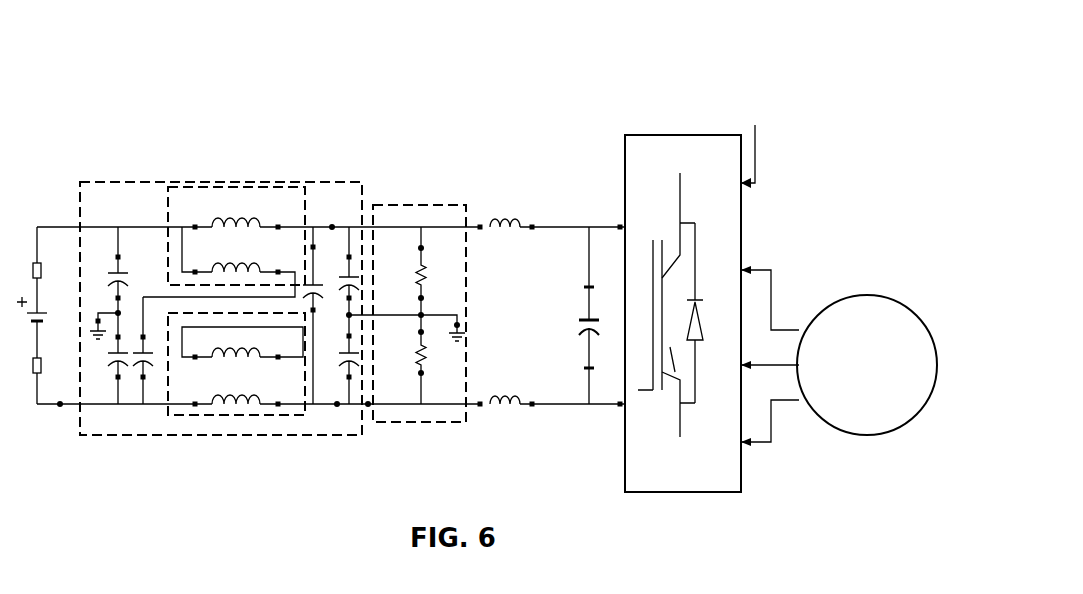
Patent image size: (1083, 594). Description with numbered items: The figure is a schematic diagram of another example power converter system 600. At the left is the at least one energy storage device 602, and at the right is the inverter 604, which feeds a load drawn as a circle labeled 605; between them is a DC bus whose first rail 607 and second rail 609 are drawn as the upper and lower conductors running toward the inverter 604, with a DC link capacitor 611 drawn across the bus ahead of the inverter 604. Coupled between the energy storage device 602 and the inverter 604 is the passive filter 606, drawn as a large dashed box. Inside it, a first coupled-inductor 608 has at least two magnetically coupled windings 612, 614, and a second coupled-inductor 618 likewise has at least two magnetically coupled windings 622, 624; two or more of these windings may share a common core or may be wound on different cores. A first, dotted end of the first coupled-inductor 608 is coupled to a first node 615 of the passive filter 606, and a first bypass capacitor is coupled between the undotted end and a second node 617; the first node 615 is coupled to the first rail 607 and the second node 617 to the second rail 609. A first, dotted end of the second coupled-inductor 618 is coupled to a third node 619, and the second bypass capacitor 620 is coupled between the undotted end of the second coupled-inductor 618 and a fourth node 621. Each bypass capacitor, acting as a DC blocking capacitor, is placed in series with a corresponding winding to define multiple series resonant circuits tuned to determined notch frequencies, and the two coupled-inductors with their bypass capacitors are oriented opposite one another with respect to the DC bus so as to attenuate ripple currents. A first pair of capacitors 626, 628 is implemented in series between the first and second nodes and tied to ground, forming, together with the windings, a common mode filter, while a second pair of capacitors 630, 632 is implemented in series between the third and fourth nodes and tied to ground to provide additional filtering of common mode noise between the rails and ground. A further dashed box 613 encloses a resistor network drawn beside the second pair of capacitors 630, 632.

The power converter system 600 is at (762, 46).
The energy storage device 602 is at (20, 320).
The inverter 604 is at (686, 135).
The motor 605 is at (891, 381).
The passive filter 606 is at (237, 181).
The first rail 607 is at (572, 226).
The first coupled-inductor 608 is at (216, 186).
The second rail 609 is at (578, 406).
The DC link capacitor 611 is at (583, 334).
The winding of first coupled-inductor 612 is at (240, 214).
The resistor network 613 is at (430, 205).
The winding of first coupled-inductor 614 is at (252, 262).
The first node 615 is at (60, 226).
The second node 617 is at (60, 406).
The second coupled-inductor 618 is at (198, 418).
The third node 619 is at (497, 218).
The second bypass capacitor 620 is at (319, 290).
The fourth node 621 is at (332, 225).
The winding of second coupled-inductor 622 is at (197, 351).
The winding of second coupled-inductor 624 is at (236, 412).
The first pair capacitor 626 is at (112, 272).
The first pair capacitor 628 is at (110, 356).
The second pair capacitor 630 is at (340, 289).
The second pair capacitor 632 is at (337, 357).